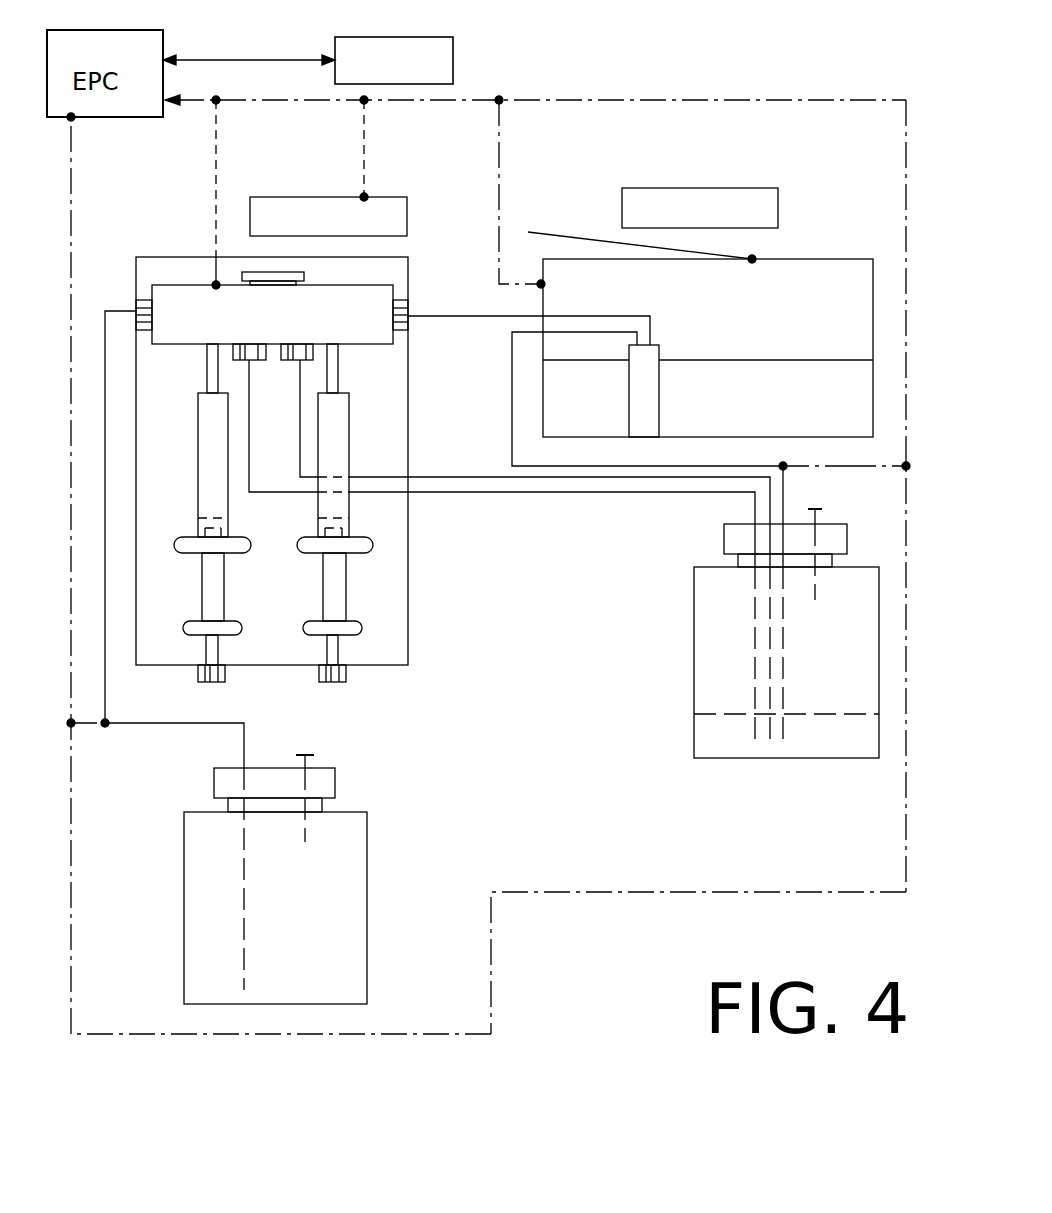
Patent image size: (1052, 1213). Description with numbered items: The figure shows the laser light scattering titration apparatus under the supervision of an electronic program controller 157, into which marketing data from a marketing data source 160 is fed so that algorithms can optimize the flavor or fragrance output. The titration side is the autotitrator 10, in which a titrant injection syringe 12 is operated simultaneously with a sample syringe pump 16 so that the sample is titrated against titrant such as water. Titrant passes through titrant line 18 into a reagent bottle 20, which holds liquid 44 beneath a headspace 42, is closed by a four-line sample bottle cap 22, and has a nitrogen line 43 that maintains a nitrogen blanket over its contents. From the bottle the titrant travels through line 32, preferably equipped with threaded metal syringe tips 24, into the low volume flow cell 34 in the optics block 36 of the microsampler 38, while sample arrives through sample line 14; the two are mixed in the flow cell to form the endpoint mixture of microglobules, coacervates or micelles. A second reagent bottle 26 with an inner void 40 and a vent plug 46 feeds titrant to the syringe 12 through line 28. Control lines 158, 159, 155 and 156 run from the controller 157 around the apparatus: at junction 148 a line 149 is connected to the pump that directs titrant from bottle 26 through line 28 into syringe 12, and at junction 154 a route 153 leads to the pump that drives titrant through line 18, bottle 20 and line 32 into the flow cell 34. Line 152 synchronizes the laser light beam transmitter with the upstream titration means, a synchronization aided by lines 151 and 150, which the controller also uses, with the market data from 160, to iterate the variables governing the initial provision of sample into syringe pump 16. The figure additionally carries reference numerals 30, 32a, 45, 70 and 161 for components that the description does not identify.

The autotitrator 10 is at (395, 208).
The titrant injection syringe 12 is at (212, 478).
The sample line 14 is at (467, 312).
The sample syringe pump 16 is at (335, 435).
The titrant line 18 is at (468, 494).
The reagent bottle 20 is at (694, 622).
The 4-line sample bottle cap 22 is at (724, 539).
The threaded metal syringe tips 24 is at (786, 656).
The reagent bottle 26 is at (355, 905).
The line 28 is at (223, 722).
The tank cap 30 is at (328, 779).
The line 32 is at (511, 432).
The conduit junction 32a is at (782, 463).
The low volume flow cell 34 is at (648, 392).
The optics block 36 is at (786, 276).
The microsampler 38 is at (745, 201).
The inner void 40 is at (290, 920).
The headspace 42 is at (728, 641).
The nitrogen line 43 is at (822, 518).
The liquid 44 is at (712, 728).
The junction 45 is at (108, 726).
The vent plug 46 is at (310, 752).
The housing 70 is at (108, 661).
The junction 148 is at (73, 725).
The line 149 is at (102, 721).
The line 150 is at (215, 203).
The line 151 is at (364, 152).
The line 152 is at (499, 155).
The route 153 is at (802, 464).
The junction 154 is at (905, 463).
The control line 155 is at (765, 100).
The control line 156 is at (193, 106).
The electronic program controller 157 is at (240, 58).
The control line 158 is at (73, 983).
The control line 159 is at (742, 891).
The marketing data source 160 is at (440, 73).
The junction 161 is at (106, 118).